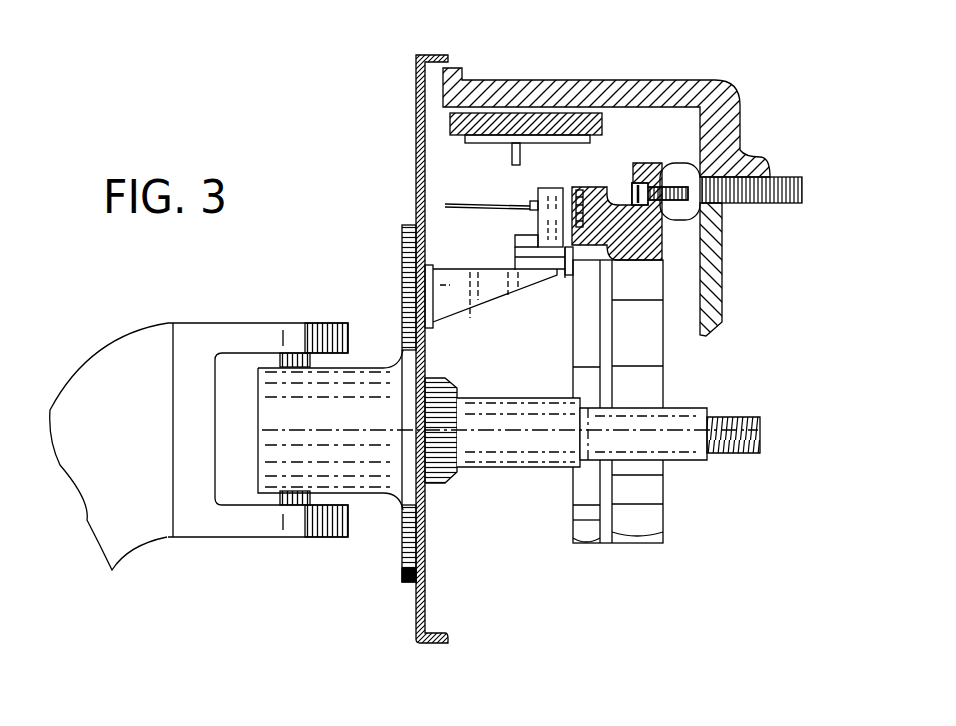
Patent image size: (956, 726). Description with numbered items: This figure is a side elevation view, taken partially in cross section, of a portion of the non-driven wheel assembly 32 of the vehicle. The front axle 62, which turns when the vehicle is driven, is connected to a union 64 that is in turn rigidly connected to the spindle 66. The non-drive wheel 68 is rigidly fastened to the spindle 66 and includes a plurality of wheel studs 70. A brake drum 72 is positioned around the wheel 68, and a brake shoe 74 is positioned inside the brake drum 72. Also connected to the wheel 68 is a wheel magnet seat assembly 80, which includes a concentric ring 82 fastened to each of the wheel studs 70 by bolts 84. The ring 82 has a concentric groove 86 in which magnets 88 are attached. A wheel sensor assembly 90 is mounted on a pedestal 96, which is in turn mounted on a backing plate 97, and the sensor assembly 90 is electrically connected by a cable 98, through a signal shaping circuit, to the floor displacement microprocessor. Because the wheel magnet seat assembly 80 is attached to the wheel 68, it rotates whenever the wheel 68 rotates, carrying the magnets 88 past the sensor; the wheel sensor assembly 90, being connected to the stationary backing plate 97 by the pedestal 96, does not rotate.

The non-driven wheel assembly 32 is at (628, 179).
The front axle 62 is at (142, 320).
The union 64 is at (400, 561).
The spindle 66 is at (690, 462).
The non-drive wheel 68 is at (723, 310).
The wheel studs 70 is at (787, 205).
The brake drum 72 is at (562, 86).
The brake shoe 74 is at (488, 118).
The wheel magnet seat assembly 80 is at (676, 378).
The concentric ring 82 is at (572, 522).
The bolts 84 is at (630, 200).
The concentric groove 86 is at (568, 250).
The magnets 88 is at (578, 206).
The wheel sensor assembly 90 is at (527, 182).
The pedestal 96 is at (457, 268).
The backing plate 97 is at (417, 100).
The cable 98 is at (452, 197).